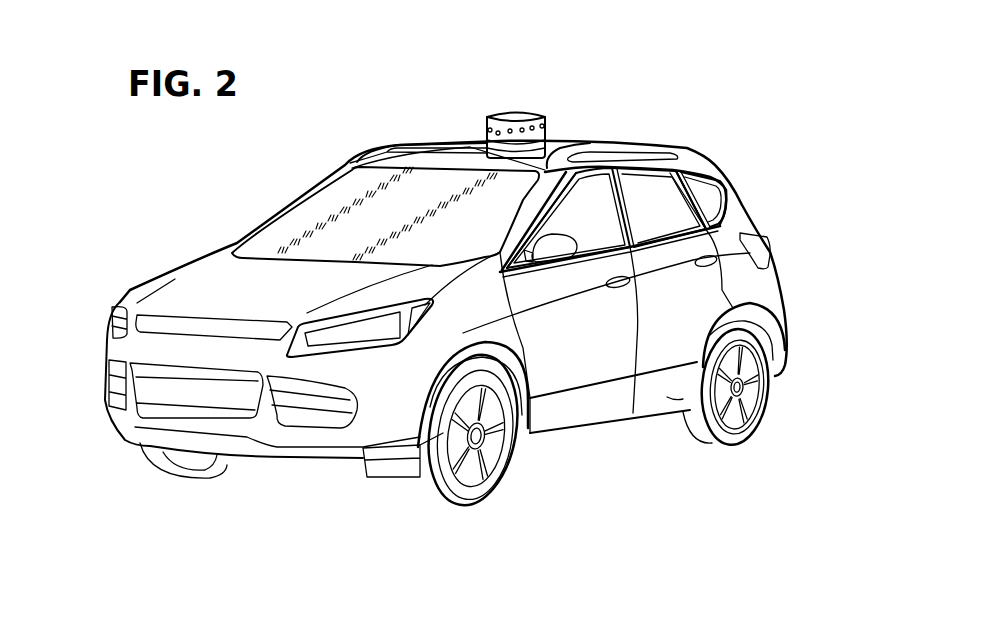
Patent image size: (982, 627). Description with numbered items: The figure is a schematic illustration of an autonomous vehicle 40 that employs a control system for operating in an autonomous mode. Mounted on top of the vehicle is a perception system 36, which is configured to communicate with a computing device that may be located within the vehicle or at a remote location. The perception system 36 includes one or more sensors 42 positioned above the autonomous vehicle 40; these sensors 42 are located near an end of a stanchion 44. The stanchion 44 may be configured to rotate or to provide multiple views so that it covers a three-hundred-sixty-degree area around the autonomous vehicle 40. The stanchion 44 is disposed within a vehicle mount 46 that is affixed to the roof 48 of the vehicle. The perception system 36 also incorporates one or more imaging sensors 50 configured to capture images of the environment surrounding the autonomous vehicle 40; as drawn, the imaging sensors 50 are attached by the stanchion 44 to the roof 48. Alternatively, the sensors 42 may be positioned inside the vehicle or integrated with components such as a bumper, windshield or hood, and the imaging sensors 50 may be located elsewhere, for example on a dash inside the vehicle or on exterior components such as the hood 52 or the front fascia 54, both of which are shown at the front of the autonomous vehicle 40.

The perception system 36 is at (495, 106).
The autonomous vehicle 40 is at (262, 177).
The sensors 42 is at (533, 124).
The stanchion 44 is at (550, 143).
The vehicle mount 46 is at (480, 147).
The roof 48 is at (413, 163).
The imaging sensors 50 is at (487, 128).
The hood 52 is at (185, 293).
The front fascia 54 is at (150, 349).